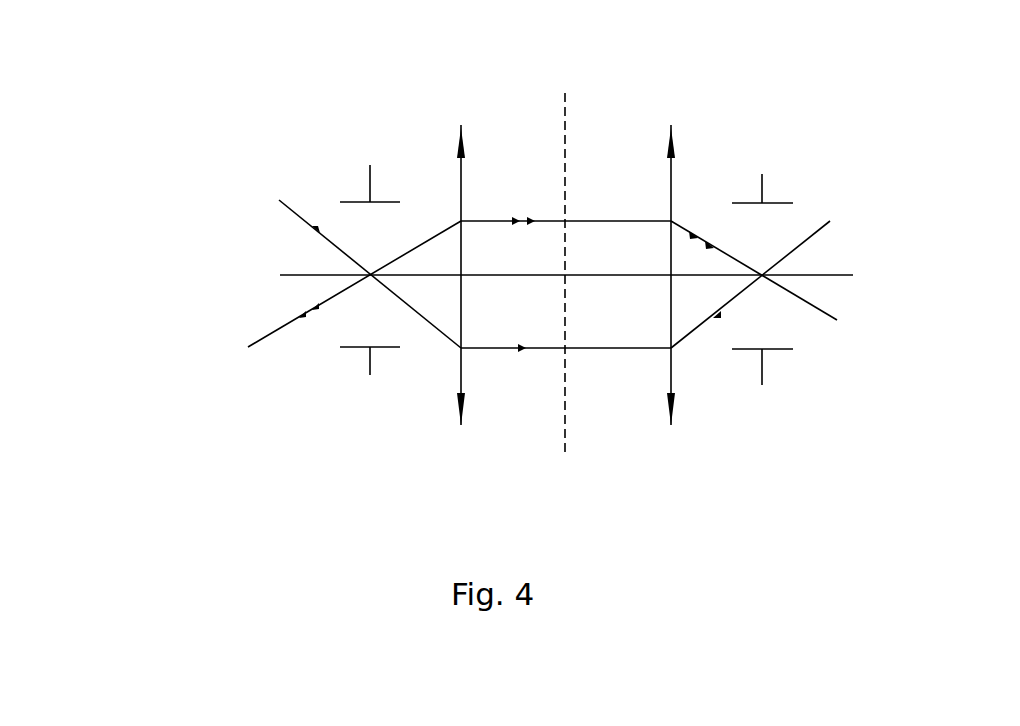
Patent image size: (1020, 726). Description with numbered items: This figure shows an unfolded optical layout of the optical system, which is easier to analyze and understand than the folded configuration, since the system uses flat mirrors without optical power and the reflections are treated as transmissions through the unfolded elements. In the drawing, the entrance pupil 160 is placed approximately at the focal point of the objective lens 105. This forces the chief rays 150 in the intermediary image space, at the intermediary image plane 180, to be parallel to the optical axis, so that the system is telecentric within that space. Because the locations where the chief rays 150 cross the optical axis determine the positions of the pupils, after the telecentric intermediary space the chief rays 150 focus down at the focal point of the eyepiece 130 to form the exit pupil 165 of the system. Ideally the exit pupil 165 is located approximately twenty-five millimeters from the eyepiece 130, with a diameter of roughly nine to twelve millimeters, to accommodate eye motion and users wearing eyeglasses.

The objective lens 105 is at (450, 441).
The eyepiece 130 is at (671, 443).
The chief rays 150 is at (262, 260).
The entrance pupil 160 is at (346, 364).
The exit pupil 165 is at (776, 405).
The intermediary image plane 180 is at (562, 82).